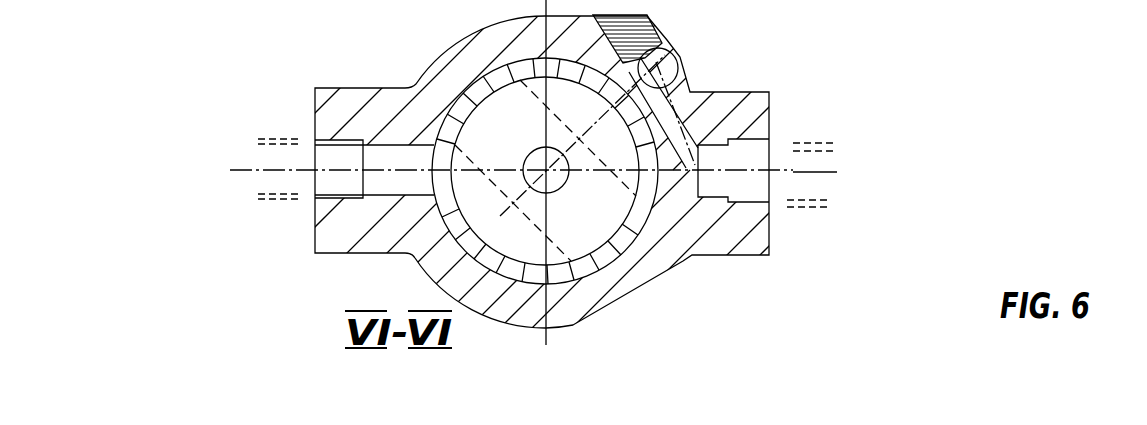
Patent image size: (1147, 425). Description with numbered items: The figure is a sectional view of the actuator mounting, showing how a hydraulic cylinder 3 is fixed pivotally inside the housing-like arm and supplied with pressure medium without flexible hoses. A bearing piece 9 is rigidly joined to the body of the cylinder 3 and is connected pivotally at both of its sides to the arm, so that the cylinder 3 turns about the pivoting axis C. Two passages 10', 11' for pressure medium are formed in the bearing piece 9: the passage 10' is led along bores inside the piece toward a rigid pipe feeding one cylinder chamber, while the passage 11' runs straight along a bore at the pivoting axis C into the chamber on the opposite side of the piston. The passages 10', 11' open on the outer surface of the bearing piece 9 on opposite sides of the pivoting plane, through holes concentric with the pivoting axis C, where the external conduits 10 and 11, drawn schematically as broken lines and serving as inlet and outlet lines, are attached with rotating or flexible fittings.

The cylinder 3 is at (608, 250).
The bearing piece 9 is at (315, 226).
The conduit 10 is at (789, 144).
The passage 10' is at (640, 115).
The conduit 11 is at (333, 129).
The passage 11' is at (360, 114).
The pivoting axis C is at (793, 172).